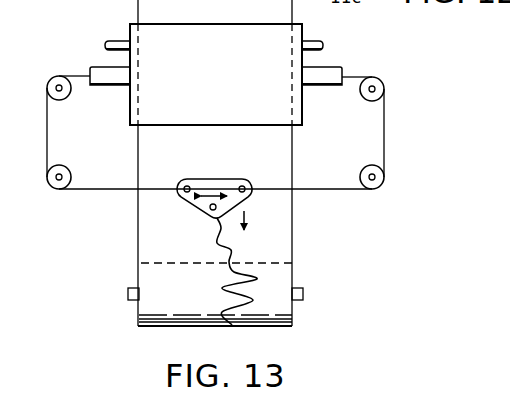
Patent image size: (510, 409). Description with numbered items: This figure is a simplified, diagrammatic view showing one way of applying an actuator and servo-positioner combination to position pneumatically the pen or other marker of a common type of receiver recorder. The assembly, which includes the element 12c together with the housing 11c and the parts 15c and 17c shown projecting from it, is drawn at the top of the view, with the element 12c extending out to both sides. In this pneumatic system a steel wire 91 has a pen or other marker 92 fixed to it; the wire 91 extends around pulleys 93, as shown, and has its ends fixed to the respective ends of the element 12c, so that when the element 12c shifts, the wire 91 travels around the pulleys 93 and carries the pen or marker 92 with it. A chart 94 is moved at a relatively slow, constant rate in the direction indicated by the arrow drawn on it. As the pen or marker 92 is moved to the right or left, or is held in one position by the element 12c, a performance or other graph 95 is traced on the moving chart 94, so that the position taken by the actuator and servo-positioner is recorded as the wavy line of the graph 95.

The housing 11c is at (305, 22).
The element 12c is at (115, 82).
The tab 15c is at (318, 41).
The tab 17c is at (118, 41).
The steel wire 91 is at (108, 190).
The pen or other marker 92 is at (212, 209).
The pulleys 93 is at (56, 76).
The chart 94 is at (293, 224).
The performance or other graph 95 is at (227, 290).